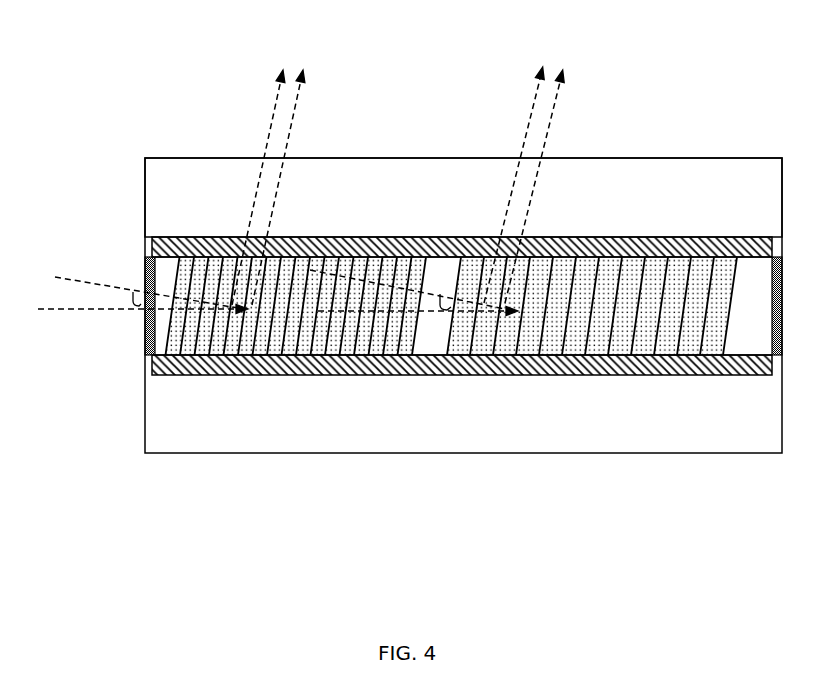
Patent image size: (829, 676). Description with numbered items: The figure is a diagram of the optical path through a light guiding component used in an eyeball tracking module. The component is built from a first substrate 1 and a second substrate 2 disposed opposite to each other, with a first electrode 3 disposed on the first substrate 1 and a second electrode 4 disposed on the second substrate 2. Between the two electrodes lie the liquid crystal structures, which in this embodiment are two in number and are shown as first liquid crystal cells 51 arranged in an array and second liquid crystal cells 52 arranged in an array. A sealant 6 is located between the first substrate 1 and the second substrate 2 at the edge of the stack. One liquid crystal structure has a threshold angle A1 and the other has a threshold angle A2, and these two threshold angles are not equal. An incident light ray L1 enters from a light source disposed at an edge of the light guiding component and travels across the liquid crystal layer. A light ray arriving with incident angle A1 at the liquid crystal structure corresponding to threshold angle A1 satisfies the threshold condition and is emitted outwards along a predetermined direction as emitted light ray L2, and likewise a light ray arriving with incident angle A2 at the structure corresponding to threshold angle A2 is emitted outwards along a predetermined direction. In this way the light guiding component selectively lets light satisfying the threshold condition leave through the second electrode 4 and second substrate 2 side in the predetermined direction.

The first substrate 1 is at (463, 378).
The second substrate 2 is at (463, 127).
The first electrode 3 is at (462, 477).
The second electrode 4 is at (462, 137).
The first liquid crystal cells 51 is at (296, 427).
The second liquid crystal cells 52 is at (542, 427).
The sealant 6 is at (205, 427).
The incident light ray L1 is at (97, 215).
The emitted light ray L2 is at (398, 159).
The threshold angle of one liquid crystal structure A1 is at (143, 295).
The threshold angle of the other liquid crystal structure A2 is at (414, 293).